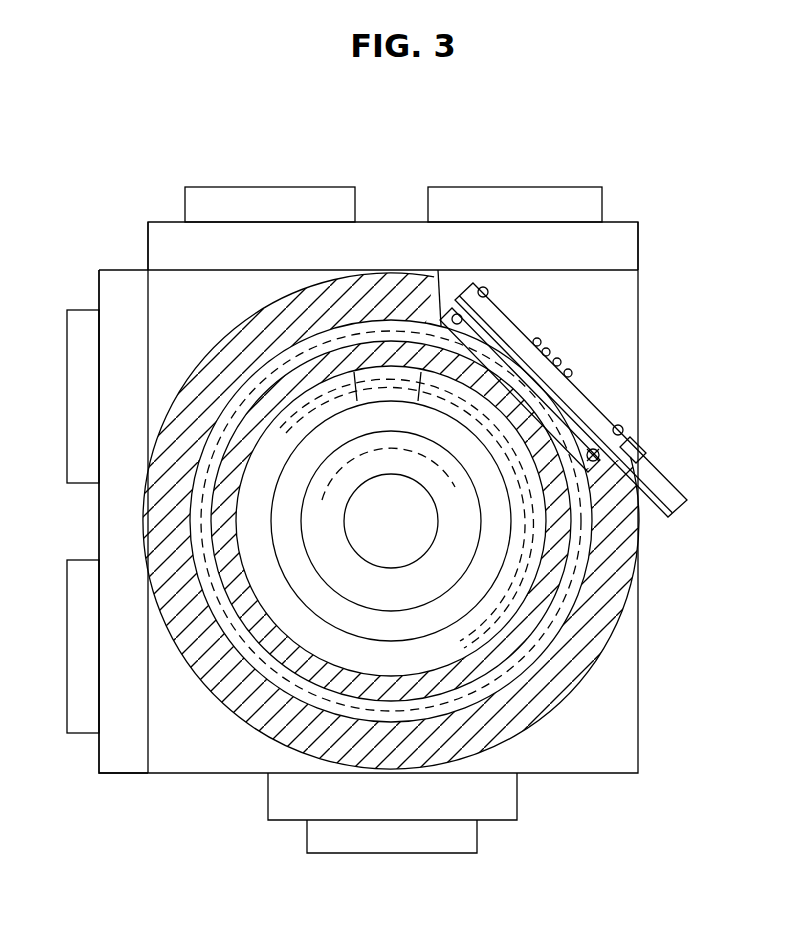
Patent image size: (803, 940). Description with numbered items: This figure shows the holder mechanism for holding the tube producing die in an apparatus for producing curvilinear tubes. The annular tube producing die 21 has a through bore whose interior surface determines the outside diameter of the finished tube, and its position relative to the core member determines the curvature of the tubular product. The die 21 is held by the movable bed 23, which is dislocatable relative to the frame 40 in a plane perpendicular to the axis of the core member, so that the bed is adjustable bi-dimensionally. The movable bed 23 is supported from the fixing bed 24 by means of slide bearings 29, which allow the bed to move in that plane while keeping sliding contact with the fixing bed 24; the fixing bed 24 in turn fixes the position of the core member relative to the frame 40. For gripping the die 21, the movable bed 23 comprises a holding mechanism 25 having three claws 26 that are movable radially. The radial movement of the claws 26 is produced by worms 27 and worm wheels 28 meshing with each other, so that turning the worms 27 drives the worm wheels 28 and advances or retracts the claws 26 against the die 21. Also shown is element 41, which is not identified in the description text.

The annular tube producing die 21 is at (510, 738).
The movable bed 23 is at (590, 343).
The fixing bed 24 is at (617, 243).
The holding mechanism 25 is at (563, 571).
The claws 26 is at (387, 295).
The worms 27 is at (575, 378).
The worm wheels 28 is at (575, 476).
The slide bearings 29 is at (292, 218).
The frame 40 is at (328, 413).
The hidden channel element 41 is at (432, 310).